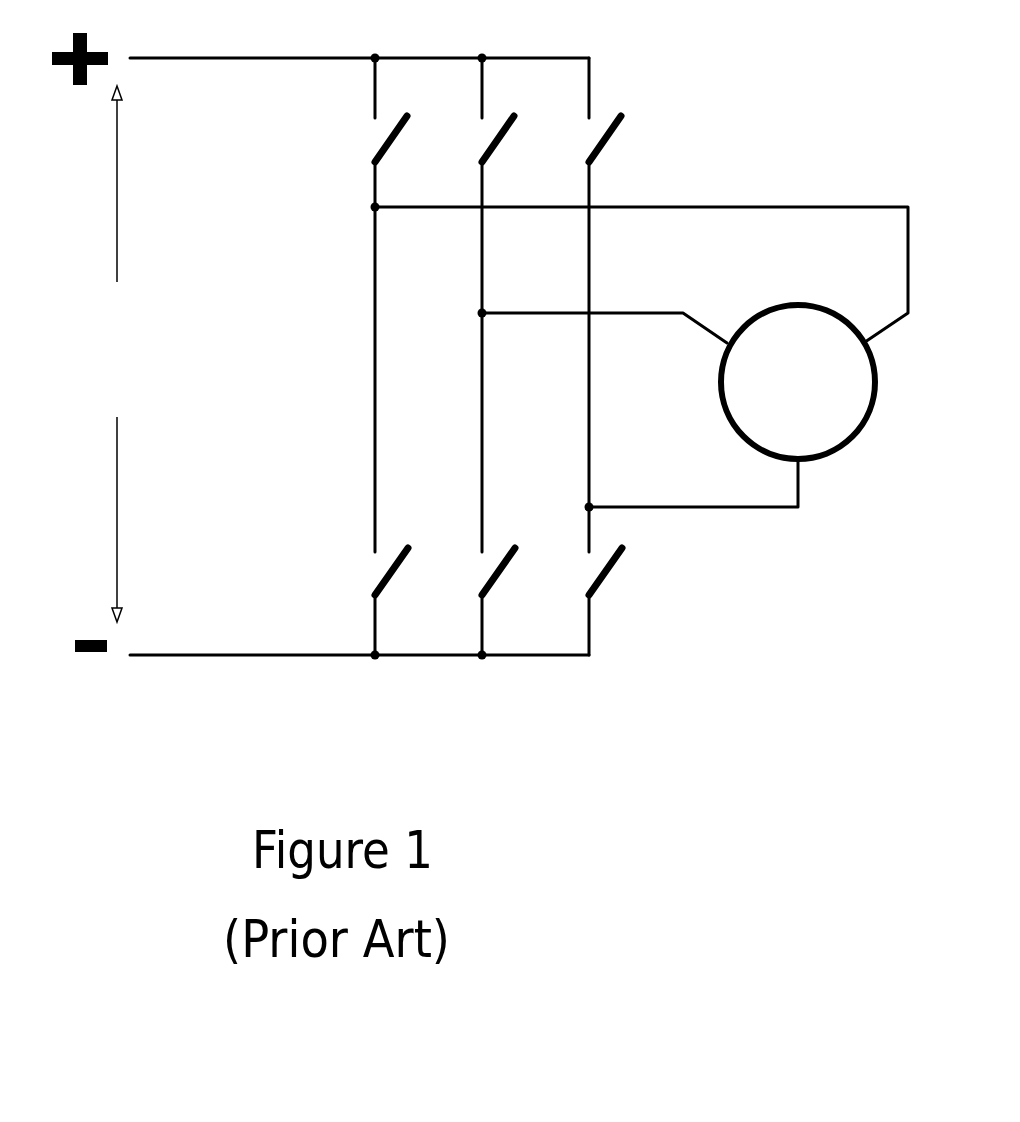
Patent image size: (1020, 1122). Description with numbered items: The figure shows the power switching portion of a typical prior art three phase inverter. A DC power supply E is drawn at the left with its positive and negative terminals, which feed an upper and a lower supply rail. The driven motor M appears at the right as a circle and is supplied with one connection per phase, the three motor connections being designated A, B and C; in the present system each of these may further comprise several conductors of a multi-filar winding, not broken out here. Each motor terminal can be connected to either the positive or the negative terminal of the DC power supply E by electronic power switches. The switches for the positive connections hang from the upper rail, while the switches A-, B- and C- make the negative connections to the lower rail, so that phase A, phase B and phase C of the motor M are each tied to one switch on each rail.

The DC power supply E is at (111, 354).
The driven motor M is at (798, 382).
The motor connection for phase A is at (646, 302).
The motor connection for phase B is at (603, 355).
The motor connection for phase C is at (715, 490).
The electronic power switch A- is at (366, 561).
The electronic power switch B- is at (472, 559).
The electronic power switch C- is at (583, 559).